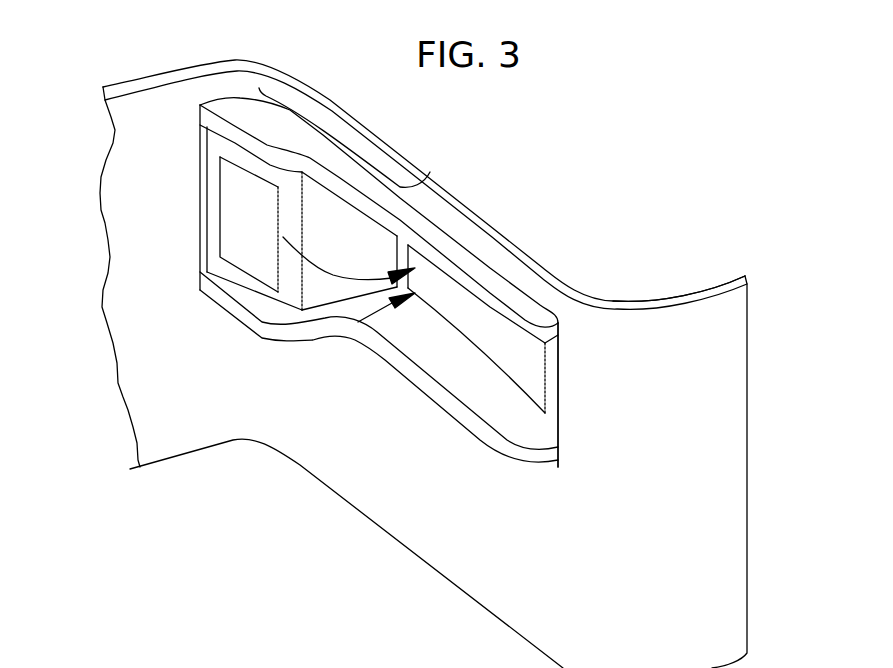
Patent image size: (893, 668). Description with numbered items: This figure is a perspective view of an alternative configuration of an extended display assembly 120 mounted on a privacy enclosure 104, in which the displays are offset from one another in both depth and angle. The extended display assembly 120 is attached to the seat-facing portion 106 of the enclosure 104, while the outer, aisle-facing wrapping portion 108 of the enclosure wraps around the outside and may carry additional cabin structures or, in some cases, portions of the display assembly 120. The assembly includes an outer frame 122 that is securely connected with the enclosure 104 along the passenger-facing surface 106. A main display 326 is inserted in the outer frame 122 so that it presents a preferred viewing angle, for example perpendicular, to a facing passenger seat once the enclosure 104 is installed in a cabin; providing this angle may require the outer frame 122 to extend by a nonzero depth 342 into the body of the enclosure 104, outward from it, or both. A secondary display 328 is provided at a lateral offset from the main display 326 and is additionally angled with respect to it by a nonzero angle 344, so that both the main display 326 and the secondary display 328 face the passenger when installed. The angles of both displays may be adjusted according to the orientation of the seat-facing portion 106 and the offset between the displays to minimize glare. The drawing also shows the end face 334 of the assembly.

The enclosure 104 is at (580, 270).
The seat-facing portion 106 is at (458, 565).
The aisle-facing wrapping portion 108 is at (698, 310).
The extended display assembly 120 is at (465, 207).
The outer frame 122 is at (420, 194).
The main display 326 is at (533, 364).
The secondary display 328 is at (260, 229).
The stiffener end face 334 is at (556, 385).
The nonzero depth 342 is at (377, 315).
The nonzero angle 344 is at (333, 275).